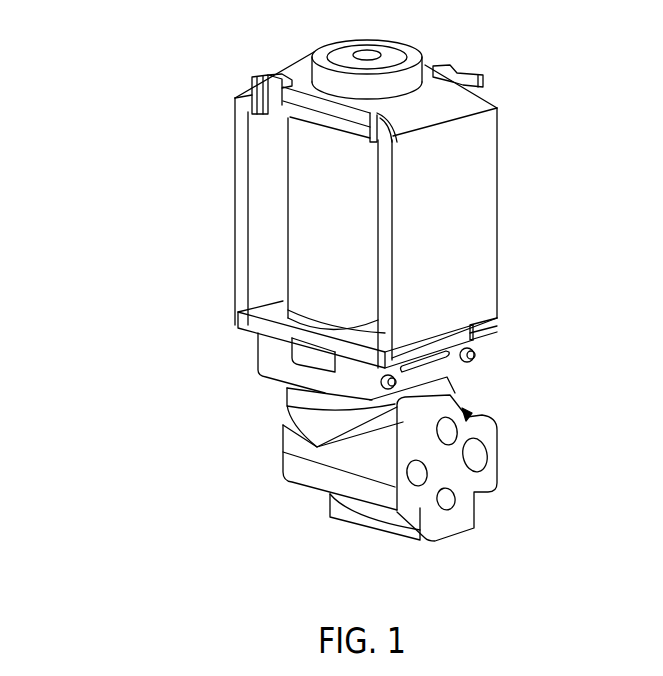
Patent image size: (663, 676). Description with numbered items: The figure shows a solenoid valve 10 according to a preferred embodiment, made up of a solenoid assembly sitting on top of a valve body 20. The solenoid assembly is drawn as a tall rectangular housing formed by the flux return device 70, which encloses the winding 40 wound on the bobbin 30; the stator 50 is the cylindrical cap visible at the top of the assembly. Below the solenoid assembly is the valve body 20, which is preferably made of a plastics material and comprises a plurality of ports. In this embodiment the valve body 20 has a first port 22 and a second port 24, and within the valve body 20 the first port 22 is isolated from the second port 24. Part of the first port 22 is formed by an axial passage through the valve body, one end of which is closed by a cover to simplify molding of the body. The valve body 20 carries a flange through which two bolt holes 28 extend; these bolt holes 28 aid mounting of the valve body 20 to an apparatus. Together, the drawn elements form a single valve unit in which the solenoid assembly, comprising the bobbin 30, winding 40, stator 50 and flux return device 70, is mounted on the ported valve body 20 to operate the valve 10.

The solenoid valve 10 is at (150, 78).
The valve body 20 is at (480, 427).
The first port 22 is at (440, 500).
The second port 24 is at (465, 420).
The bolt holes 28 is at (475, 458).
The bobbin 30 is at (262, 305).
The winding 40 is at (310, 213).
The stator 50 is at (388, 53).
The flux return device 70 is at (453, 247).